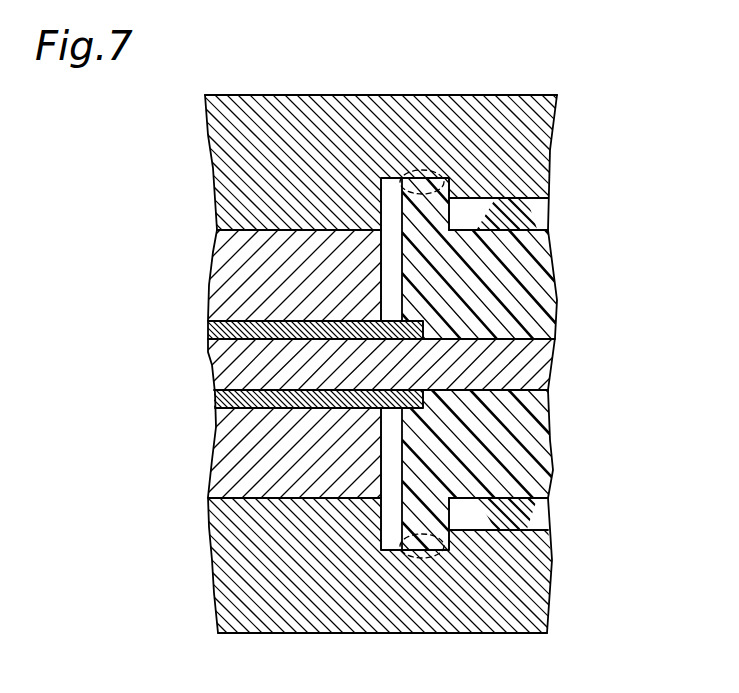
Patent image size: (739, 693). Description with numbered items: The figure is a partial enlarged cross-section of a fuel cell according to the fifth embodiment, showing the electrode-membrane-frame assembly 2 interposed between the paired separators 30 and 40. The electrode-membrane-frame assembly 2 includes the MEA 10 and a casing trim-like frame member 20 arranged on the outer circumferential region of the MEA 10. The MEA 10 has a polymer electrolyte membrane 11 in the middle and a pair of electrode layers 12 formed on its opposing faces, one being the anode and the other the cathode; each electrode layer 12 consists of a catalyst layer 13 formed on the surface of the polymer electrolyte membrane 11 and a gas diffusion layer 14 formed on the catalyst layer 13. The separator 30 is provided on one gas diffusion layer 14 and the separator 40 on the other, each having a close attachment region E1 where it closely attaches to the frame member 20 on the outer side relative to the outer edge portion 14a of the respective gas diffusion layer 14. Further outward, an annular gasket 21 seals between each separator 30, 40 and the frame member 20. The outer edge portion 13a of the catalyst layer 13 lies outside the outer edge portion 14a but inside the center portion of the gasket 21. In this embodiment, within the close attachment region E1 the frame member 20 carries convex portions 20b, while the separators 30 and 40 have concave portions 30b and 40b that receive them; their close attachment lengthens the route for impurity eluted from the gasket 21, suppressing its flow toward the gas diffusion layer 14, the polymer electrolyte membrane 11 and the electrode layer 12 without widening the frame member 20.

The electrode-membrane-frame assembly 2 is at (625, 357).
The MEA 10 is at (93, 290).
The polymer electrolyte membrane 11 is at (212, 364).
The electrode layer 12 is at (145, 262).
The catalyst layer 13 is at (208, 331).
The outer edge portion of the catalyst layer 13a is at (423, 332).
The gas diffusion layer 14 is at (214, 281).
The outer edge portion of the gas diffusion layer 14a is at (384, 283).
The frame member 20 is at (535, 248).
The convex portion 20b is at (450, 188).
The gasket 21 is at (527, 212).
The separator 30 is at (535, 150).
The concave portion 30b is at (387, 176).
The separator 40 is at (535, 580).
The concave portion 40b is at (387, 552).
The close attachment region E1 is at (422, 171).